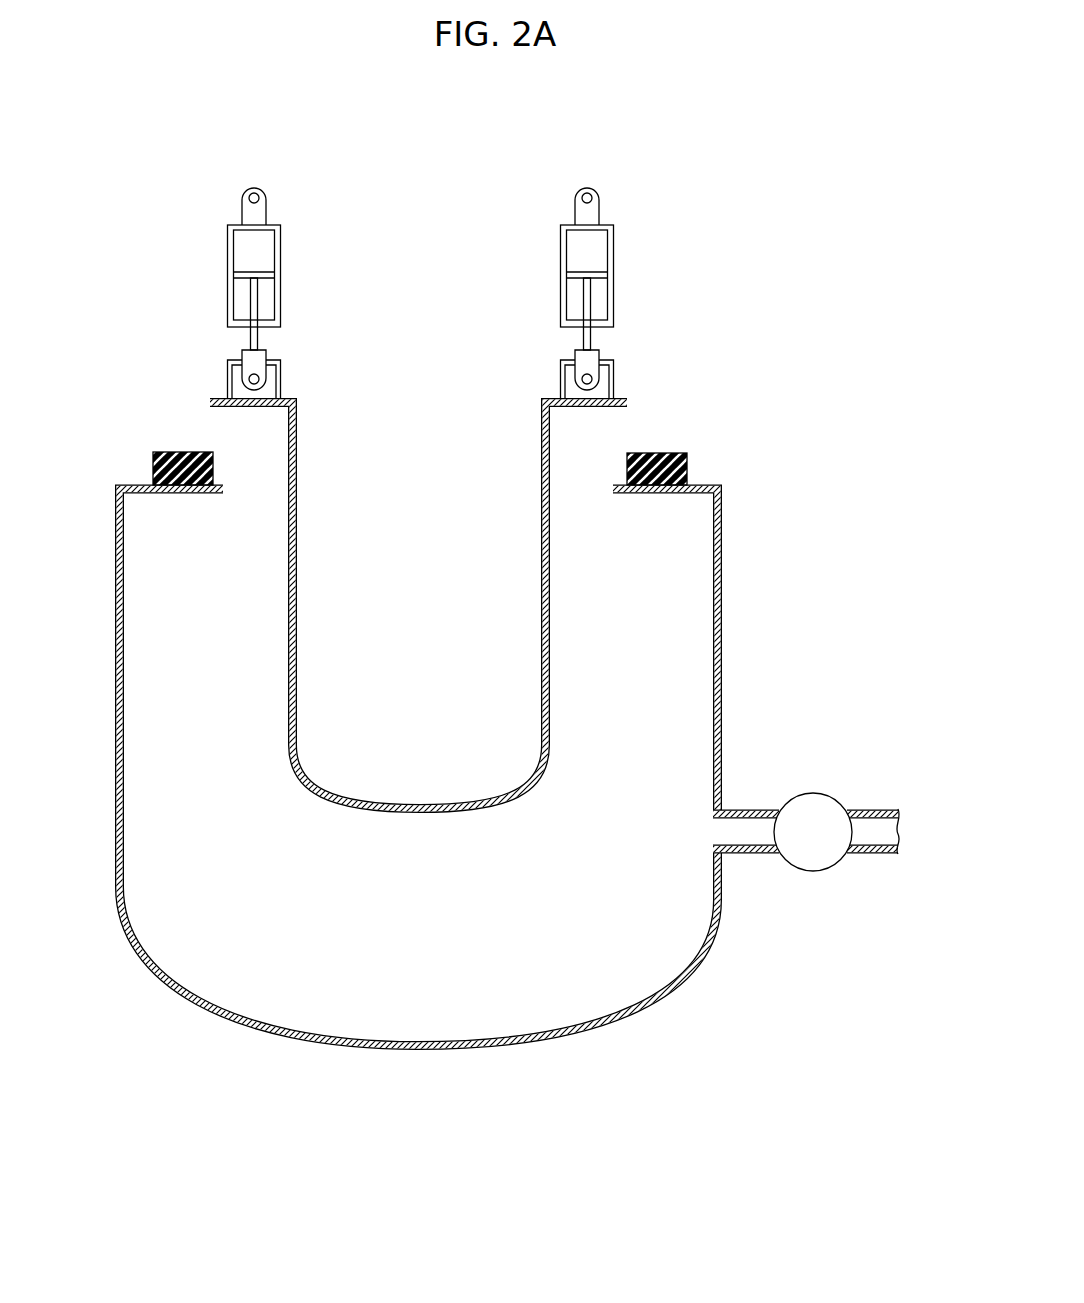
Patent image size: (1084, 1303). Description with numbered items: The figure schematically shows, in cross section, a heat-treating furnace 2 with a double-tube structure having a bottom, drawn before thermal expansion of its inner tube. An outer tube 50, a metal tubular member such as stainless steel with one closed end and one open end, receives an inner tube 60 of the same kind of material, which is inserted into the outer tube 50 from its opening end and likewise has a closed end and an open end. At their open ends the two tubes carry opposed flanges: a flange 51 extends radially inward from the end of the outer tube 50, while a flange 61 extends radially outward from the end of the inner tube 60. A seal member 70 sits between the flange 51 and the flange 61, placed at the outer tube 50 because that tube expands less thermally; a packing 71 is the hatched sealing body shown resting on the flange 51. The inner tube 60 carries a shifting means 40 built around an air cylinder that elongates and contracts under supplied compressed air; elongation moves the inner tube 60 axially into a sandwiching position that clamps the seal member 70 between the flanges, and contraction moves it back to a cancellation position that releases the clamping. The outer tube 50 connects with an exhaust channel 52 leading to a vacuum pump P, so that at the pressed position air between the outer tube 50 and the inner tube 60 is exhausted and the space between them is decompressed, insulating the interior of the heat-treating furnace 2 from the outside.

The heat-treating furnace 2 is at (732, 178).
The shifting means 40 is at (284, 246).
The outer tube 50 is at (724, 595).
The flange 51 is at (618, 494).
The exhaust channel 52 is at (745, 828).
The inner tube 60 is at (539, 595).
The flange 61 is at (617, 397).
The seal member 70 is at (457, 433).
The packing 71 is at (687, 472).
The vacuum pump P is at (813, 858).